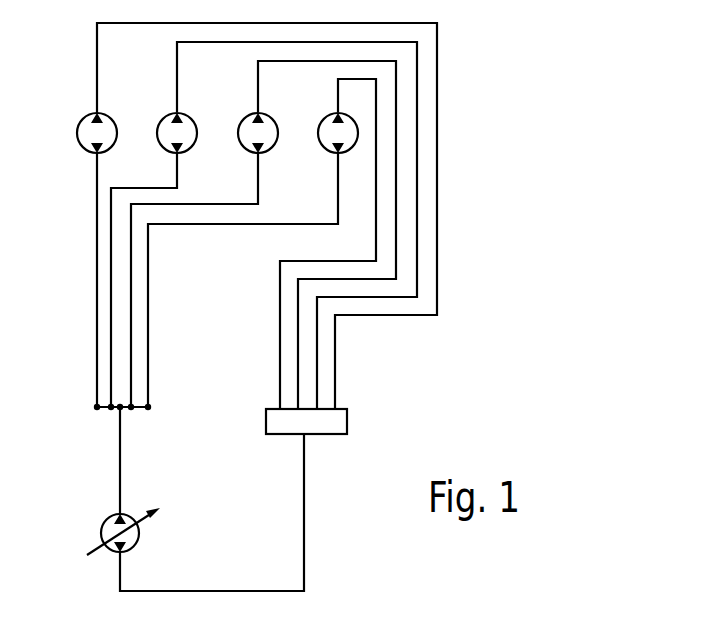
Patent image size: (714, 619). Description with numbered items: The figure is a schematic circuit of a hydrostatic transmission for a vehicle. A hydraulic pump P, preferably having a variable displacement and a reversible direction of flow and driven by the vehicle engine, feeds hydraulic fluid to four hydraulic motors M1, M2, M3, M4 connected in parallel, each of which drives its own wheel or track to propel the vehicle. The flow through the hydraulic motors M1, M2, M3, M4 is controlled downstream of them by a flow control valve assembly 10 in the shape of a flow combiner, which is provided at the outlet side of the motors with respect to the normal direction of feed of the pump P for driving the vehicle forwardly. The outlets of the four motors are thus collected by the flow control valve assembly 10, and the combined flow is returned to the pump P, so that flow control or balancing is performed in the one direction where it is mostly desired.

The hydraulic motor M1 is at (83, 118).
The hydraulic motor M2 is at (164, 118).
The hydraulic motor M3 is at (245, 118).
The hydraulic motor M4 is at (325, 118).
The flow control valve assembly 10 is at (347, 421).
The hydraulic pump P is at (103, 541).